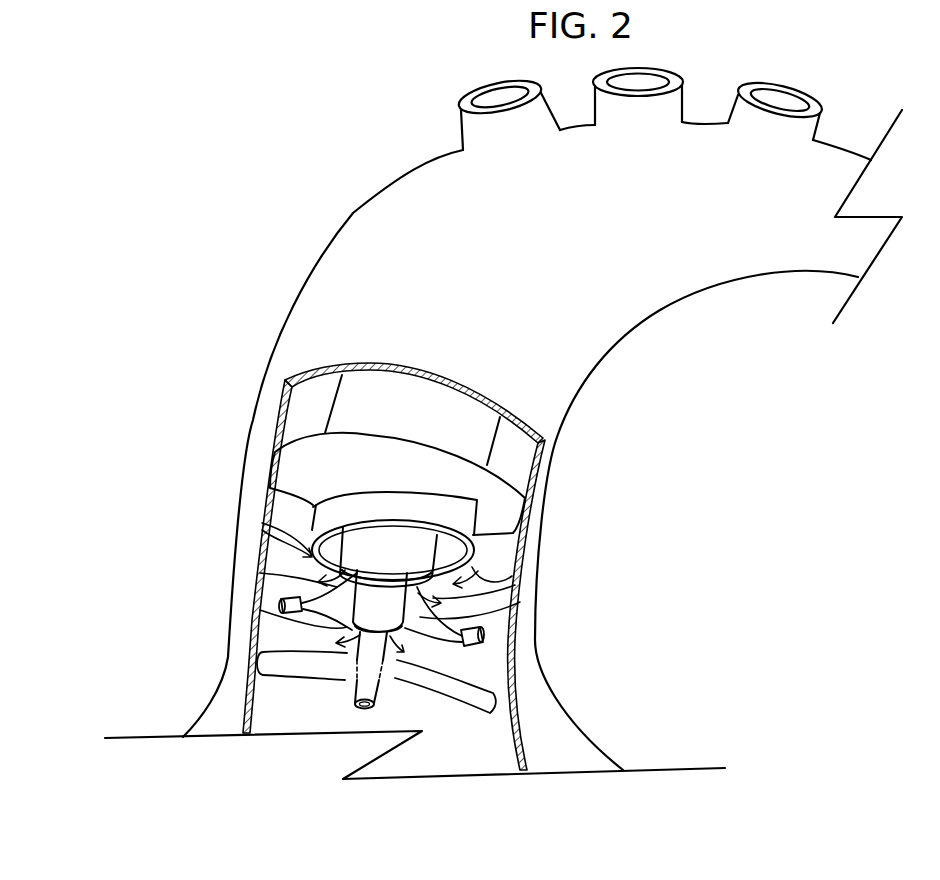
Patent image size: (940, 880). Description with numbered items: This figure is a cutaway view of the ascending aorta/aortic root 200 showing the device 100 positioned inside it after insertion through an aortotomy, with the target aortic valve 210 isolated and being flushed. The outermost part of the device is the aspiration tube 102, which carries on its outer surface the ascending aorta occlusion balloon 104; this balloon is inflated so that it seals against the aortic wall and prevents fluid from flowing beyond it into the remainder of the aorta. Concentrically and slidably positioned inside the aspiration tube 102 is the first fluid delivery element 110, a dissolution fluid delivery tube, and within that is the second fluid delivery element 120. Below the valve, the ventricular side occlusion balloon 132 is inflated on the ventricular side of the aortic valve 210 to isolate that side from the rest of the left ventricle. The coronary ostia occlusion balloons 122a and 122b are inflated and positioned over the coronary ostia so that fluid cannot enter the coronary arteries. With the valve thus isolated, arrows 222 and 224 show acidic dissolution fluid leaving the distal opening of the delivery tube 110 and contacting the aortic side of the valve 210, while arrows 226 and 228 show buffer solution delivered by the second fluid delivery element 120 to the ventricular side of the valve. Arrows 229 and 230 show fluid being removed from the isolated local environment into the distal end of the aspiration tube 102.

The ascending aorta/aortic root 200 is at (458, 346).
The device 100 is at (430, 420).
The ascending aorta occlusion balloon 104 is at (410, 475).
The aspiration tube 102 is at (397, 514).
The first fluid delivery element 110 is at (403, 555).
The second fluid delivery element 120 is at (398, 605).
The ventricular side aortic valve occlusion balloon 132 is at (495, 695).
The coronary ostia occlusion balloon 122a is at (484, 634).
The coronary ostia occlusion balloon 122b is at (280, 603).
The aortic valve 210 is at (290, 632).
The arrow 222 is at (490, 612).
The arrow 224 is at (300, 576).
The arrow 226 is at (393, 653).
The arrow 228 is at (352, 652).
The arrow 229 is at (490, 587).
The arrow 230 is at (262, 530).